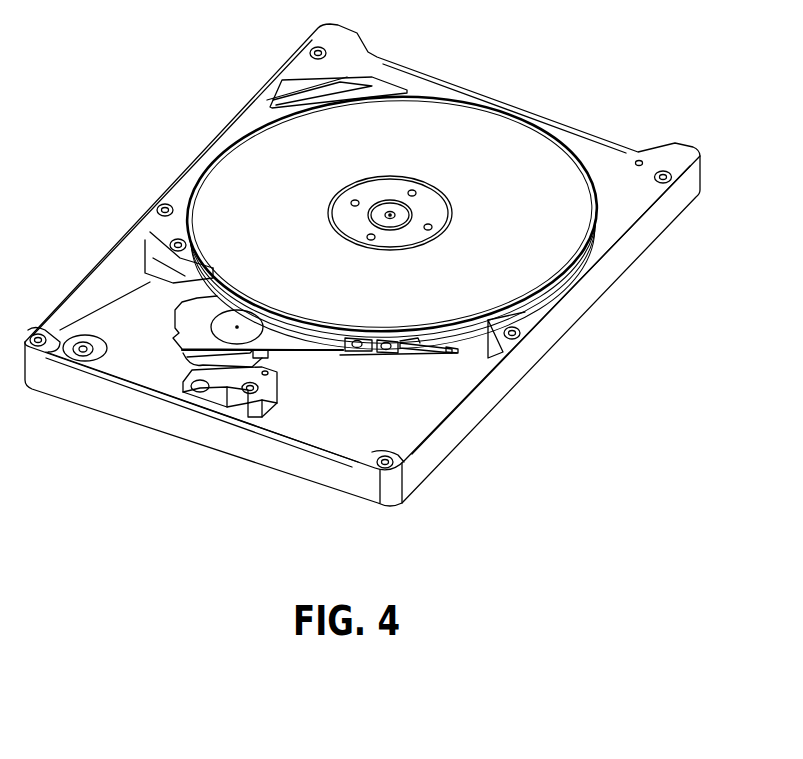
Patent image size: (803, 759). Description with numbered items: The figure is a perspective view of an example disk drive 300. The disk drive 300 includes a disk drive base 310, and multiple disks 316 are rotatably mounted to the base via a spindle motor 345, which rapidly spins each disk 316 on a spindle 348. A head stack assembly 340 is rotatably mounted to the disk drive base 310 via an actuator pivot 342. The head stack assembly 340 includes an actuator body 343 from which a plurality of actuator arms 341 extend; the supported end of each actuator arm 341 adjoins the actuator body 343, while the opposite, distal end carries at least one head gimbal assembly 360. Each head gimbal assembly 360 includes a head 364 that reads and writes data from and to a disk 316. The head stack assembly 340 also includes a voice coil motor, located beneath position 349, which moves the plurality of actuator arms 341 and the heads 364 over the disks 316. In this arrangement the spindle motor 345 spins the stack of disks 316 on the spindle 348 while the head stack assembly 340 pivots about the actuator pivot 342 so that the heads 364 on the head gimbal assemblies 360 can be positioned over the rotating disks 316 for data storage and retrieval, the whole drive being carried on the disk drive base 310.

The disk drive 300 is at (157, 49).
The disk drive base 310 is at (538, 347).
The disks 316 is at (526, 145).
The head stack assembly 340 is at (283, 332).
The actuator arms 341 is at (333, 340).
The actuator pivot 342 is at (258, 310).
The actuator body 343 is at (214, 304).
The spindle motor 345 is at (406, 178).
The spindle 348 is at (407, 218).
The voice coil motor position 349 is at (122, 328).
The head gimbal assembly 360 is at (412, 353).
The head 364 is at (450, 350).